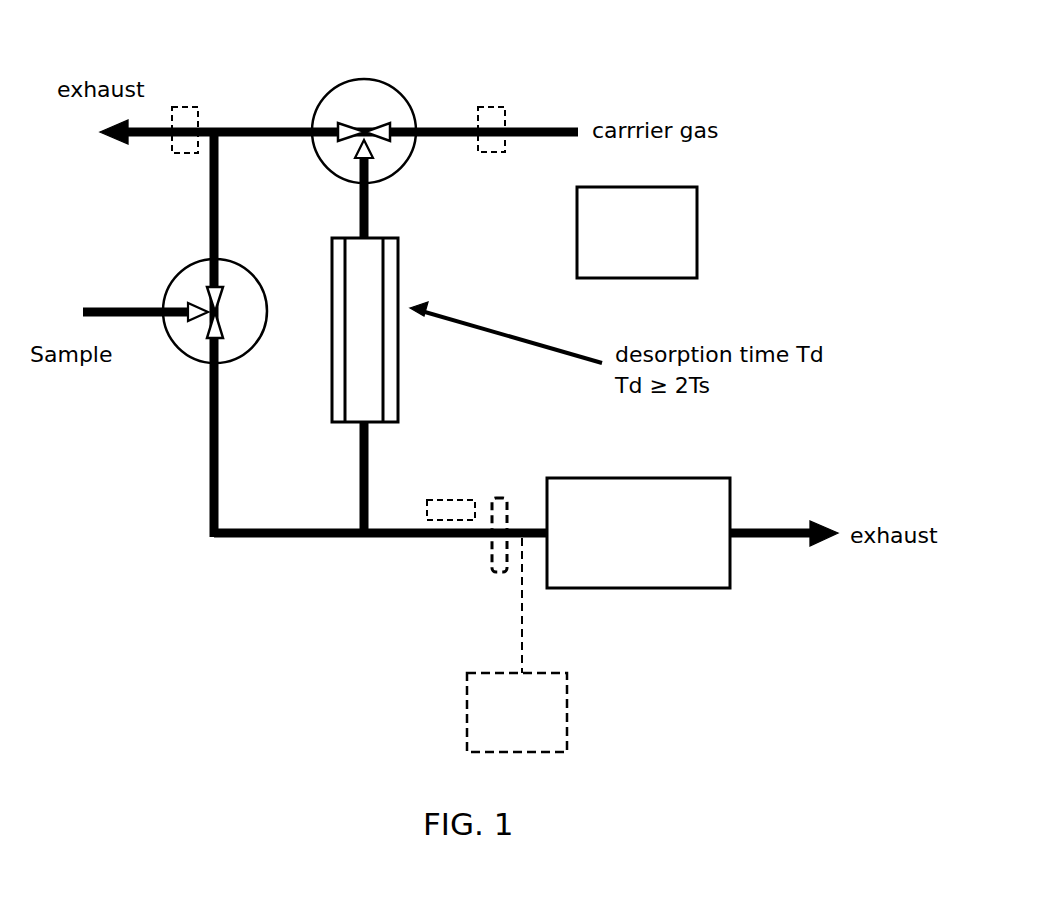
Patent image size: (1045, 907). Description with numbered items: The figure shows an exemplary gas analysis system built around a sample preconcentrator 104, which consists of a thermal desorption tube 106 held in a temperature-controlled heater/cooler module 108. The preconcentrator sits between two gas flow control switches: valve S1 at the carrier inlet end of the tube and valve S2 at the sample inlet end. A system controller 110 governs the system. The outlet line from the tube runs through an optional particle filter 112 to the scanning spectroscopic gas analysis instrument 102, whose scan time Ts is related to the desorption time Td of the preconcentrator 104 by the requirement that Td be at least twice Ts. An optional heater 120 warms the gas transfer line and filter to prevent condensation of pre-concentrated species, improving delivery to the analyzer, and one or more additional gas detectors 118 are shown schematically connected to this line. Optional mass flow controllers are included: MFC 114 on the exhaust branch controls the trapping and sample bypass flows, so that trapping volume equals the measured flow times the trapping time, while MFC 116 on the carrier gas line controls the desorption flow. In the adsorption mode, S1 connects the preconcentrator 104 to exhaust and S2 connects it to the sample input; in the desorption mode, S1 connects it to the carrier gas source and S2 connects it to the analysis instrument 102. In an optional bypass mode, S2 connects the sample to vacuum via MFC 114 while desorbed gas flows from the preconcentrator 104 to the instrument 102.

The gas analysis instrument 102 is at (615, 522).
The sample preconcentrator 104 is at (416, 265).
The thermal desorption tube 106 is at (362, 372).
The heater/cooler 108 is at (392, 380).
The system controller 110 is at (616, 245).
The particle filter 112 is at (497, 502).
The mass flow controller 114 is at (190, 110).
The mass flow controller 116 is at (490, 112).
The additional gas detectors 118 is at (489, 727).
The heater 120 is at (450, 507).
The gas flow control switch S1 is at (342, 95).
The gas flow control switch S2 is at (193, 342).